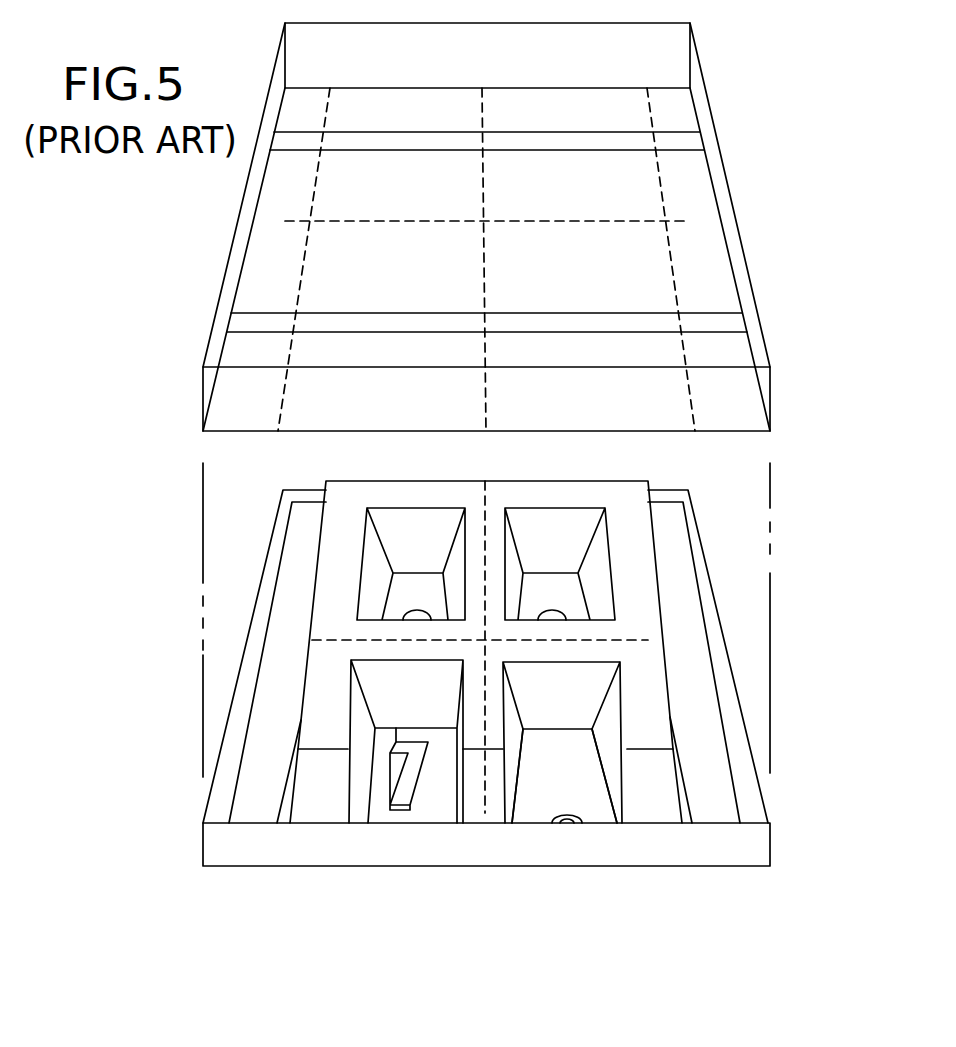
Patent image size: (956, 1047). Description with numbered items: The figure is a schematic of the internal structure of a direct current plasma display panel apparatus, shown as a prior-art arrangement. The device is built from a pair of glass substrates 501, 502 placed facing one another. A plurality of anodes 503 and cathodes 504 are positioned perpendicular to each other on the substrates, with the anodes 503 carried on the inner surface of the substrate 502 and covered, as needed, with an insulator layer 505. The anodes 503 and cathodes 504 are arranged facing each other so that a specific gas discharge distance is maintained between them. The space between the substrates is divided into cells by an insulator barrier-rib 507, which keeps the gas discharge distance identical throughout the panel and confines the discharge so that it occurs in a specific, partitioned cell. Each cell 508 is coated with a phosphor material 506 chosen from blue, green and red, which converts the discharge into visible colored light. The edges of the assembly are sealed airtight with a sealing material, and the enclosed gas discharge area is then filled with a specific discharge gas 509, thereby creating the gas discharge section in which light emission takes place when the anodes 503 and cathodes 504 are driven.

The glass substrate 501 is at (704, 327).
The glass substrate 502 is at (774, 852).
The anode 503 is at (557, 823).
The cathode 504 is at (677, 143).
The insulator layer 505 is at (588, 813).
The phosphor material 506 is at (432, 587).
The insulator barrier-rib 507 is at (335, 552).
The cell 508 is at (610, 509).
The discharge gas 509 is at (553, 587).